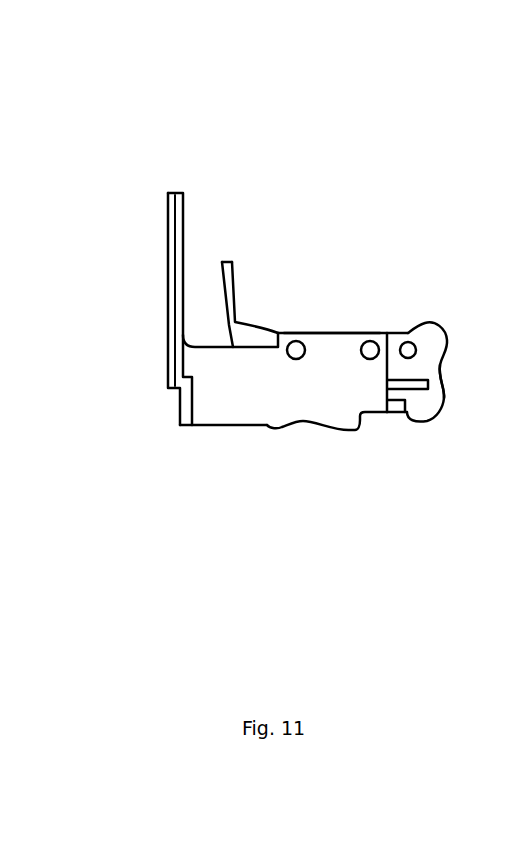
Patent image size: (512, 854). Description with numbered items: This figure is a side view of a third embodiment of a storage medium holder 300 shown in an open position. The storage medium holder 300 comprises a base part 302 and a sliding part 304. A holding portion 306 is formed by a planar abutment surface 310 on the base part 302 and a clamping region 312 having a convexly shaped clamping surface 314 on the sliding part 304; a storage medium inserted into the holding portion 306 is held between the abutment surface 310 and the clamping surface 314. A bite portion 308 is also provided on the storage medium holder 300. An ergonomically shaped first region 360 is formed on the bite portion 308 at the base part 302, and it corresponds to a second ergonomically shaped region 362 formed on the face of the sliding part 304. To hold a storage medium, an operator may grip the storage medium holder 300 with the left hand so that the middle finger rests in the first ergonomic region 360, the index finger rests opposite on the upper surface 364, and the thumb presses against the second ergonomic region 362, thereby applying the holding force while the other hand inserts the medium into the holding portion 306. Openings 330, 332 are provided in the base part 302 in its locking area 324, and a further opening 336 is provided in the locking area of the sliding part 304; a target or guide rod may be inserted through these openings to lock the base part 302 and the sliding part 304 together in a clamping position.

The storage medium holder 300 is at (341, 117).
The base part 302 is at (212, 438).
The sliding part 304 is at (450, 317).
The holding portion 306 is at (150, 198).
The bite portion 308 is at (430, 460).
The planar abutment surface 310 is at (183, 210).
The clamping region 312 is at (244, 252).
The convexly shaped clamping surface 314 is at (222, 266).
The locking area 324 is at (382, 362).
The opening 330 is at (293, 341).
The opening 332 is at (375, 341).
The opening 336 is at (412, 342).
The first ergonomically shaped region 360 is at (305, 424).
The second ergonomically shaped region 362 is at (440, 375).
The upper surface 364 is at (340, 320).